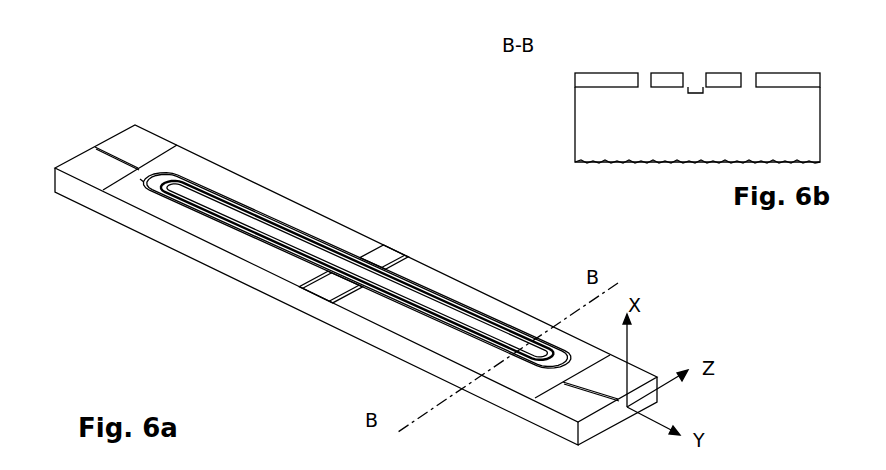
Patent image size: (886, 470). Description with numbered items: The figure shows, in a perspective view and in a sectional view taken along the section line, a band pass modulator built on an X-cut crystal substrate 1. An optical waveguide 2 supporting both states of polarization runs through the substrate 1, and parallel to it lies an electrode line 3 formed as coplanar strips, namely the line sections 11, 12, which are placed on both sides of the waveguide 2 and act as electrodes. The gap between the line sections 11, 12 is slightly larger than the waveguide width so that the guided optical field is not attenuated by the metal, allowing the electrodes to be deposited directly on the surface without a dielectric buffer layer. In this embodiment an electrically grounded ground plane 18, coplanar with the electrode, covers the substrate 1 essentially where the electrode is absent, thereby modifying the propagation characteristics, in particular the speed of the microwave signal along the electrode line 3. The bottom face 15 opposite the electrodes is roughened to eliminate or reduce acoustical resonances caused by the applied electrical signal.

In FIG. 6B, the substrate 1 is at (672, 124).
In FIG. 6B, the optical waveguide 2 is at (682, 112).
In FIG. 6A, the electrode line 3 is at (372, 254).
In FIG. 6B, the line section 11 is at (667, 51).
In FIG. 6B, the line section 12 is at (725, 51).
In FIG. 6B, the bottom face 15 is at (697, 197).
In FIG. 6A, the ground plane 18 is at (405, 325).
In FIG. 6B, the ground plane 18 is at (697, 51).